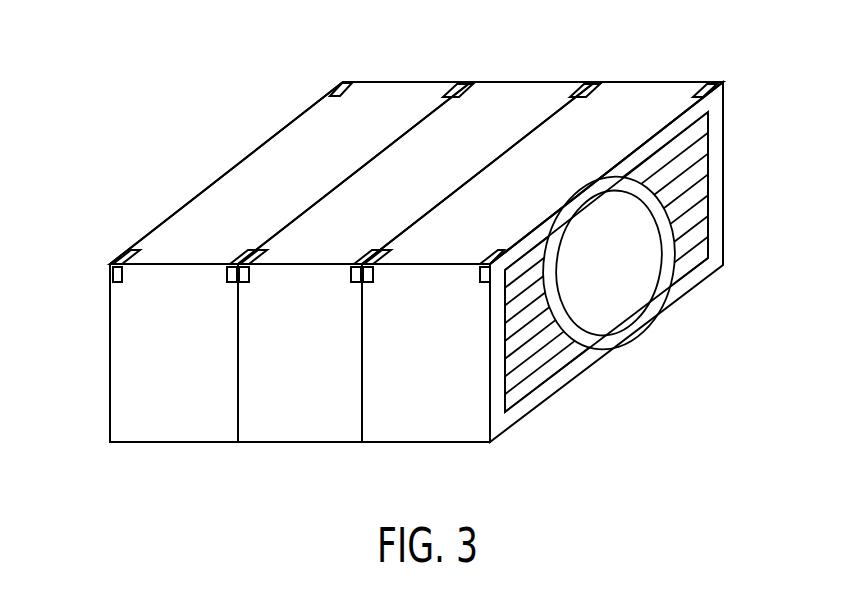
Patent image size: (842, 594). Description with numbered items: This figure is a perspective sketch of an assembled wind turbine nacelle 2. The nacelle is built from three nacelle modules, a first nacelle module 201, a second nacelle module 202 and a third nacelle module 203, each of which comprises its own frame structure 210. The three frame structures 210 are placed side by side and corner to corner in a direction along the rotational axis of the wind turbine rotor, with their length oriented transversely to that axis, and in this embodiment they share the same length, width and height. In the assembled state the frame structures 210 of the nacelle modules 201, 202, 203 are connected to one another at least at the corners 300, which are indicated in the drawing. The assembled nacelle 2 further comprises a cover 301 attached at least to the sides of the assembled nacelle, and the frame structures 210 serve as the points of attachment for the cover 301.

The wind turbine nacelle 2 is at (118, 121).
The first nacelle module 201 is at (668, 88).
The second nacelle module 202 is at (533, 90).
The third nacelle module 203 is at (382, 90).
The frame structure 210 is at (416, 133).
The corners 300 is at (255, 252).
The cover 301 is at (435, 405).